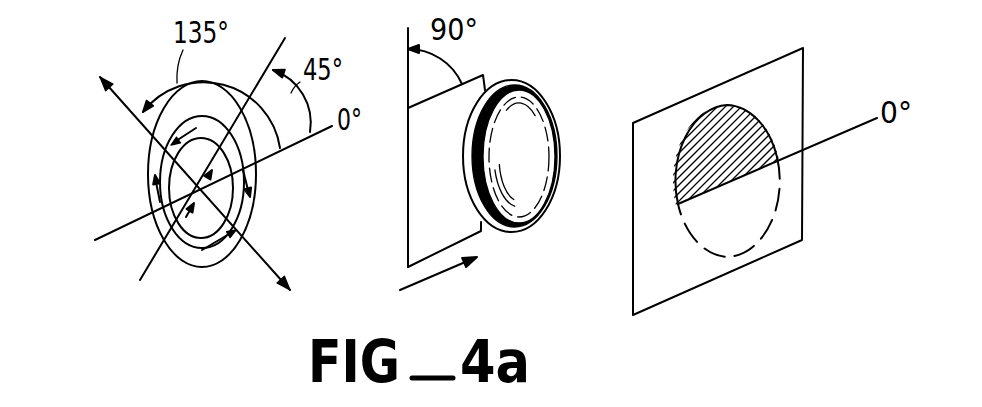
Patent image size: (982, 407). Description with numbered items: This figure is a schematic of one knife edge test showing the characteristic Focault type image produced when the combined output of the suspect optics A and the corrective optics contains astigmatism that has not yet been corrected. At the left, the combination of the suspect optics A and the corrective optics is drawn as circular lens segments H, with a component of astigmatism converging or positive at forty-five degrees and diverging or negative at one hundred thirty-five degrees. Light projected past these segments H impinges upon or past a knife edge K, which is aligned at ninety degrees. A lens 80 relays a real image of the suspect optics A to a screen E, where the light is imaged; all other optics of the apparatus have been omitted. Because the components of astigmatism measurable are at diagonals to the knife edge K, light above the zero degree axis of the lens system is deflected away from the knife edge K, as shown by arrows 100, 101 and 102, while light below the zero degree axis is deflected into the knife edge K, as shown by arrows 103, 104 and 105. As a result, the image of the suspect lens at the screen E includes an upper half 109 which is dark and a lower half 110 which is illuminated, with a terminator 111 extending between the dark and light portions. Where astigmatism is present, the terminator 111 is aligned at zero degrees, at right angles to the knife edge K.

The lens 80 is at (535, 115).
The arrow 100 is at (140, 114).
The arrow 101 is at (196, 129).
The arrow 102 is at (218, 160).
The arrow 103 is at (187, 216).
The arrow 104 is at (215, 243).
The arrow 105 is at (262, 258).
The upper half 109 is at (717, 185).
The lower half 110 is at (772, 210).
The terminator 111 is at (702, 197).
The circular lens segments H is at (178, 262).
The knife edge K is at (480, 72).
The screen E is at (660, 110).
The suspect optics A is at (698, 247).